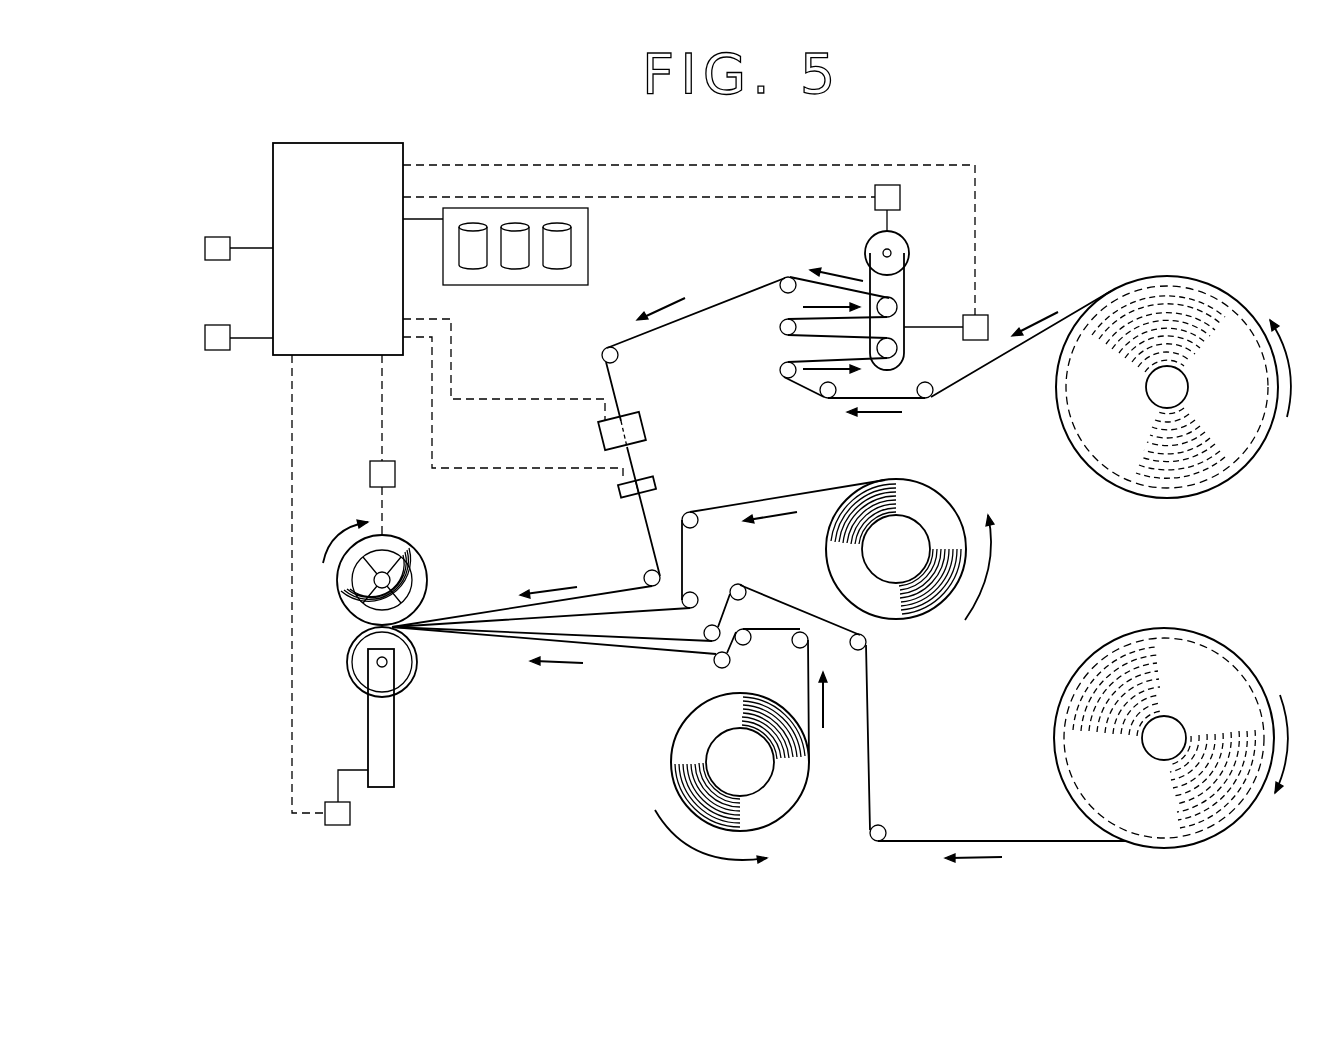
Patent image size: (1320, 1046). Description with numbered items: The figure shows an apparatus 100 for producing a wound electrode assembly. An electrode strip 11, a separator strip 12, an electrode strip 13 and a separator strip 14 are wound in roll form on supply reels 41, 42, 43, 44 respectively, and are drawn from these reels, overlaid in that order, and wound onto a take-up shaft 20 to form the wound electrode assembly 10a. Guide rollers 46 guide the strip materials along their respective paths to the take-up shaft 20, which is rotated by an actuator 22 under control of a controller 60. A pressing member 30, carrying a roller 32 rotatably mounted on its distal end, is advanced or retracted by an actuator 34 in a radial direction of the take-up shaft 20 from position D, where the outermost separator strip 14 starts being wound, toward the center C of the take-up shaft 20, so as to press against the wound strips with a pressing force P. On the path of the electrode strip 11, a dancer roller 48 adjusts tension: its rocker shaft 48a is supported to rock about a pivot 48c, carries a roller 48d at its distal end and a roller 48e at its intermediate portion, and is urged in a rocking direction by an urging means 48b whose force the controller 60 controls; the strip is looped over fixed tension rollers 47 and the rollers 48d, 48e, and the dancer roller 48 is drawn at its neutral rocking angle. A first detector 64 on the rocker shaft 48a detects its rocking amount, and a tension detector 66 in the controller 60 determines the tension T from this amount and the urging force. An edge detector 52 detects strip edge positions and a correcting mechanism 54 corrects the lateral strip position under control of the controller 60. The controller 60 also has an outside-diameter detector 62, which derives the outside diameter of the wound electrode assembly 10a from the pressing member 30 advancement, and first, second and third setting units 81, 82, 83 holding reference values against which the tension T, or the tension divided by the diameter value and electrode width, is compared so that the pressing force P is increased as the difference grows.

The apparatus for producing the wound electrode assembly 100 is at (1118, 215).
The wound electrode assembly 10a is at (425, 557).
The electrode strip 11 is at (1007, 362).
The separator strip 12 is at (590, 610).
The electrode strip 13 is at (604, 640).
The separator strip 14 is at (513, 645).
The take-up shaft 20 is at (360, 578).
The actuator 22 is at (370, 472).
The pressing member 30 is at (395, 731).
The roller 32 is at (355, 663).
The actuator 34 is at (352, 813).
The supply reel 41 is at (1238, 300).
The supply reel 42 is at (945, 496).
The supply reel 43 is at (1245, 662).
The supply reel 44 is at (790, 812).
The guide roller 46 is at (828, 400).
The tension roller 47 is at (784, 278).
The dancer roller 48 is at (840, 308).
The rocker shaft 48a is at (903, 285).
The urging means 48b is at (988, 327).
The pivot 48c is at (893, 246).
The roller 48d is at (897, 353).
The roller 48e is at (897, 310).
The edge detector 52 is at (598, 430).
The correcting mechanism 54 is at (619, 491).
The controller 60 is at (283, 172).
The outside-diameter detector 62 is at (215, 352).
The first detector 64 is at (900, 197).
The tension detector 66 is at (215, 262).
The first setting unit 81 is at (473, 265).
The second setting unit 82 is at (515, 265).
The third setting unit 83 is at (557, 265).
The center of the take-up shaft C is at (385, 570).
The position at which the outermost separator strip starts being wound D is at (403, 640).
The tension T is at (477, 610).
The pressing force P is at (349, 713).